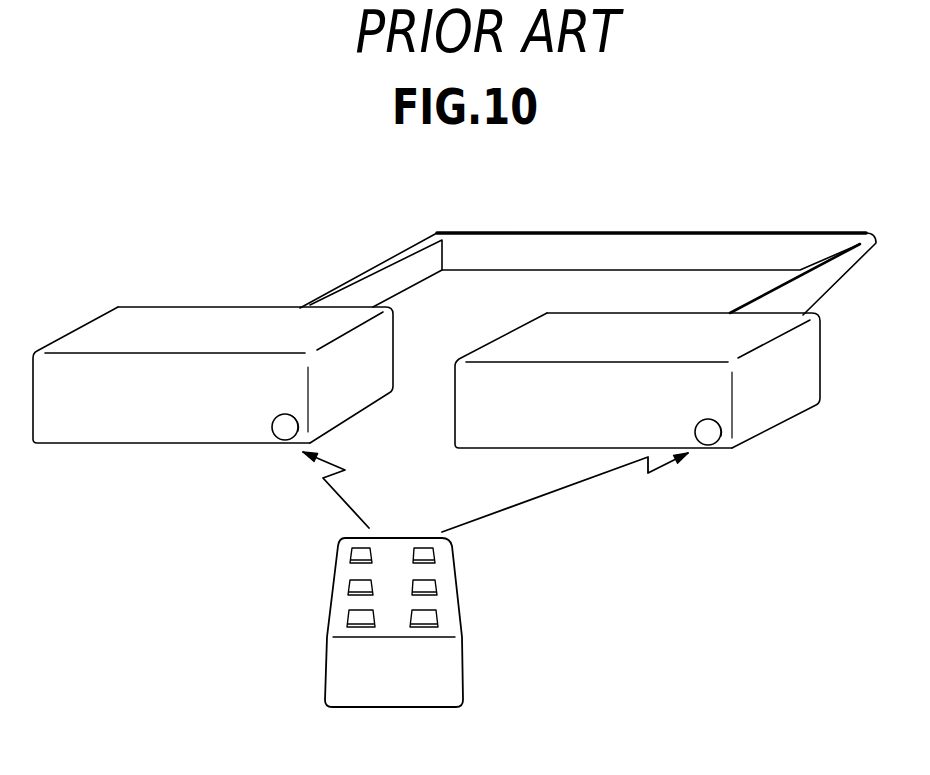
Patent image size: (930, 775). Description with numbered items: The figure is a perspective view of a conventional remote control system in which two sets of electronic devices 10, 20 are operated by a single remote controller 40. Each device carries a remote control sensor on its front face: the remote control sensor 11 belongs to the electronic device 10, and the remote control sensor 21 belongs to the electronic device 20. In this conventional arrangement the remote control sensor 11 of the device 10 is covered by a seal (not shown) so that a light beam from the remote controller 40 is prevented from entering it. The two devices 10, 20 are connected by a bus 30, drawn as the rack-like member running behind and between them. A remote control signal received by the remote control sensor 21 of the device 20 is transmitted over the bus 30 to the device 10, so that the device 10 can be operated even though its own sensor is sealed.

The electronic device 10 is at (243, 307).
The remote control sensor 11 is at (283, 428).
The electronic device 20 is at (818, 370).
The remote control sensor 21 is at (712, 437).
The bus 30 is at (577, 233).
The remote controller 40 is at (458, 593).